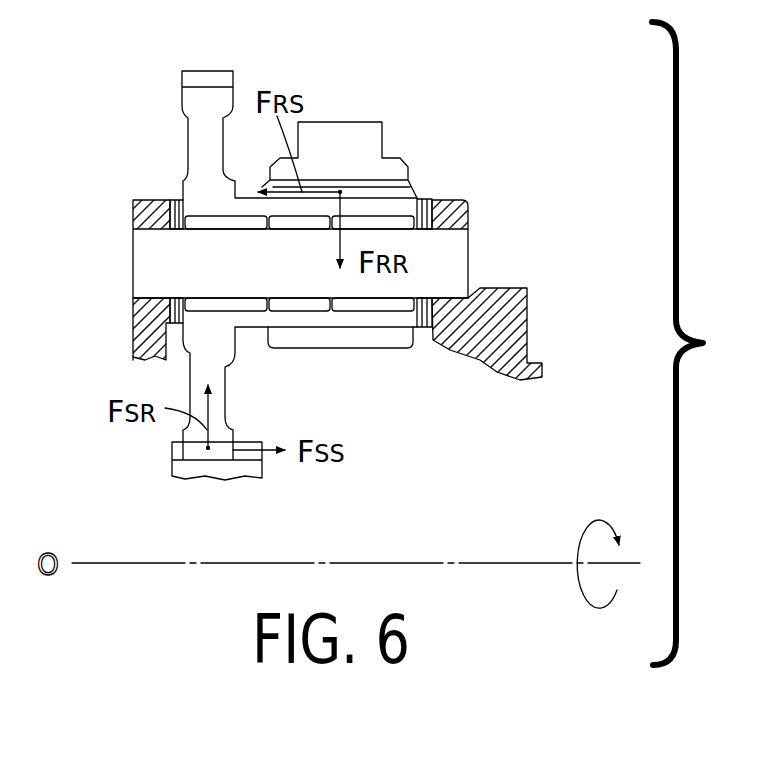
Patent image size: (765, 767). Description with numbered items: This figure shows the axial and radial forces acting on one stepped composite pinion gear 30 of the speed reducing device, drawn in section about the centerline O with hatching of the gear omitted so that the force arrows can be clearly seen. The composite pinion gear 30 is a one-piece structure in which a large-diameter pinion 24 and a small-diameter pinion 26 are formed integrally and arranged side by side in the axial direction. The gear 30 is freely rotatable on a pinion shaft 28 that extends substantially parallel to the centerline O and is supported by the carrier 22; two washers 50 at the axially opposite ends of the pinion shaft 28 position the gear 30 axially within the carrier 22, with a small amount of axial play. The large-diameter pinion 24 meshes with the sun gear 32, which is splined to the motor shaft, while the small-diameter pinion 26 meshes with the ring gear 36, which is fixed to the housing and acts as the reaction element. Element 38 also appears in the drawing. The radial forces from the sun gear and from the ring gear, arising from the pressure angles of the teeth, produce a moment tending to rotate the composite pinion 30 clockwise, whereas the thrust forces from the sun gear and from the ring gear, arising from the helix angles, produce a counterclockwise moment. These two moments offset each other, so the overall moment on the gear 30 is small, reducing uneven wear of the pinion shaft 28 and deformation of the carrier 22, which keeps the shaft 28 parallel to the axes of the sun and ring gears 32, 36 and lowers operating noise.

The carrier 22 is at (148, 340).
The large-diameter pinion 24 is at (208, 95).
The small-diameter pinion 26 is at (367, 320).
The pinion shaft 28 is at (148, 263).
The composite pinion gear 30 is at (130, 108).
The sun gear 32 is at (215, 468).
The ring gear 36 is at (375, 152).
The output member 38 is at (515, 333).
The washer 50 is at (177, 200).